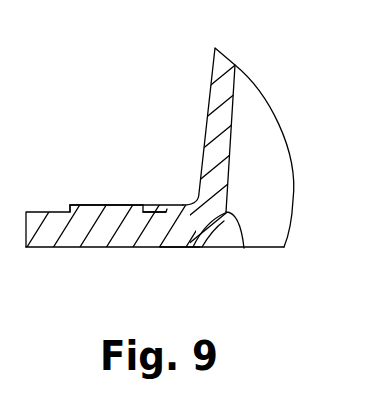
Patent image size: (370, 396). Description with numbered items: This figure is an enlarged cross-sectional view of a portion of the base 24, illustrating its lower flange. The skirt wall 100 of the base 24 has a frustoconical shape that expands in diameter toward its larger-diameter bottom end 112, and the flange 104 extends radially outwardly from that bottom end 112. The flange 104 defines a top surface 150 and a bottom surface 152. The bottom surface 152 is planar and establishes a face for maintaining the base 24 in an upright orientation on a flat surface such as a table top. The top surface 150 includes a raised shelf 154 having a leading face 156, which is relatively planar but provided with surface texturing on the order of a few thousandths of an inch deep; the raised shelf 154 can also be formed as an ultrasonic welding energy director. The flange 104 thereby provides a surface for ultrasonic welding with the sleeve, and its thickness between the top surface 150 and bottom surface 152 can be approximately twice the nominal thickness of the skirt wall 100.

The base 24 is at (101, 33).
The skirt wall 100 is at (203, 81).
The flange 104 is at (86, 258).
The bottom end 112 is at (244, 248).
The top surface 150 is at (162, 205).
The bottom surface 152 is at (170, 248).
The raised shelf 154 is at (108, 206).
The leading face 156 is at (85, 204).